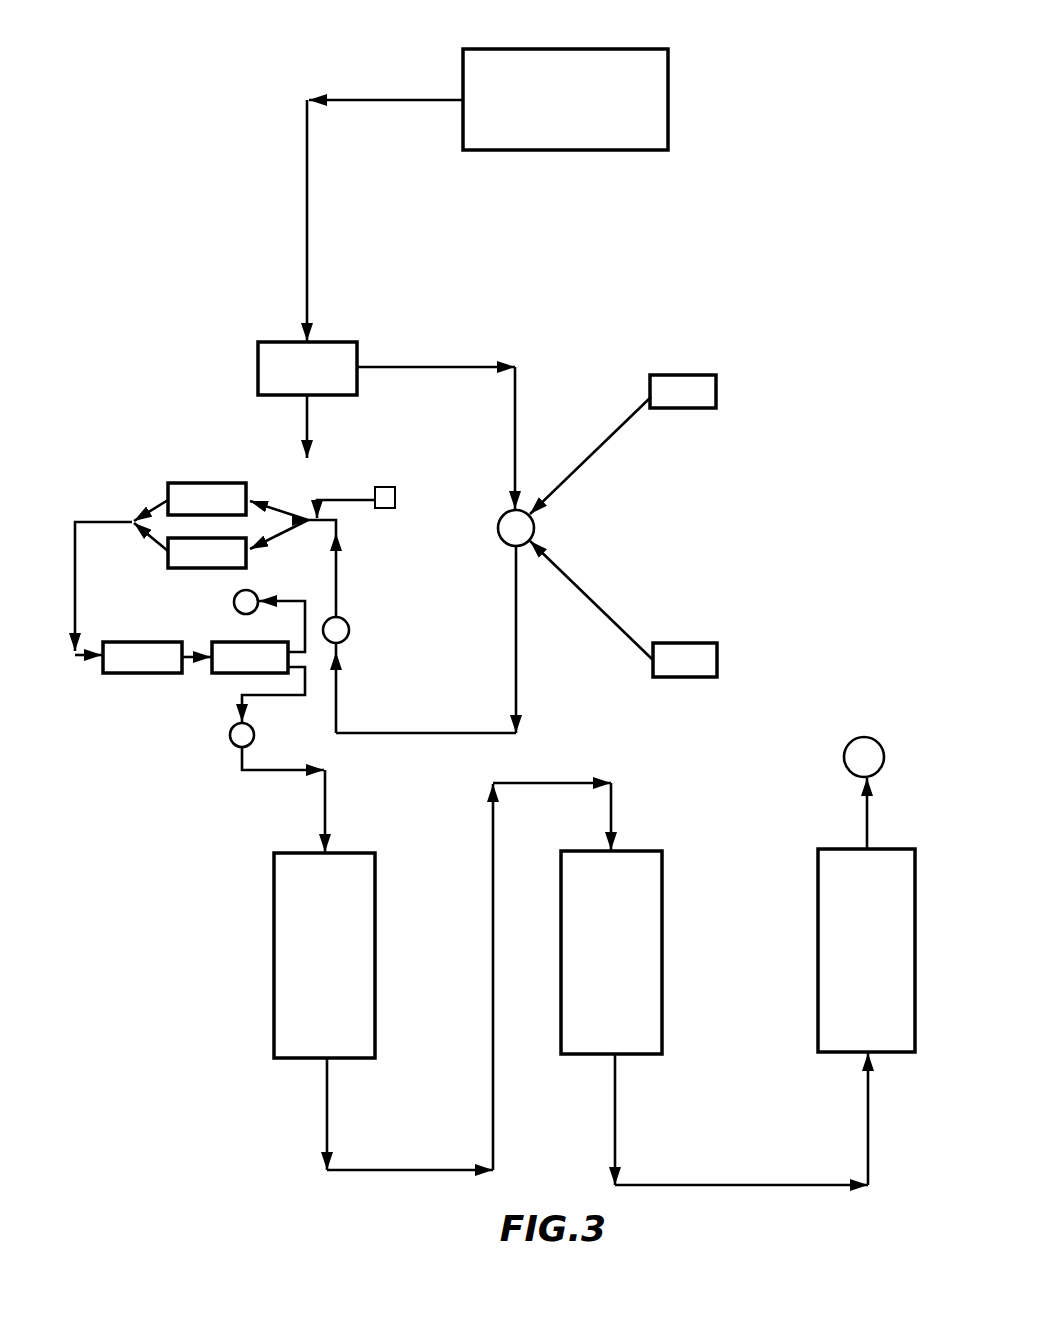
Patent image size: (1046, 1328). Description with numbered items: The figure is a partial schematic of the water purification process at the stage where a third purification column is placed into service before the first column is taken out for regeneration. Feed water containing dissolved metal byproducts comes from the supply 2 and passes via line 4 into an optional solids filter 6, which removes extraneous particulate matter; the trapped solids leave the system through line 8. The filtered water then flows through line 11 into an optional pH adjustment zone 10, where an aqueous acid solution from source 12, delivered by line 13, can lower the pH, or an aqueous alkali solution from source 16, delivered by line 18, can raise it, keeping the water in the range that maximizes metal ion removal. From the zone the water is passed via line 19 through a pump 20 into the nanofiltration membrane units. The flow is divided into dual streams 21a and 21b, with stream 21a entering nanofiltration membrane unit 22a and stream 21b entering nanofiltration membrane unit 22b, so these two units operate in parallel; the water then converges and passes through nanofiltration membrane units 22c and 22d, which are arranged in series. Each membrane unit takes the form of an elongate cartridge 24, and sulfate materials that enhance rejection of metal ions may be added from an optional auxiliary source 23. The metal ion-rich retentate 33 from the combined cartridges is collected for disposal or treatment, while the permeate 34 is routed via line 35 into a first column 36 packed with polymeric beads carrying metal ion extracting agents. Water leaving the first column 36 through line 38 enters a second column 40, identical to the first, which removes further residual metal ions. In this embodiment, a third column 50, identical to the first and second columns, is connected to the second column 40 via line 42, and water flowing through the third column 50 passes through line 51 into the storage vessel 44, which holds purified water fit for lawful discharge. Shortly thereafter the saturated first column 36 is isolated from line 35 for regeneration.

The supply 2 is at (655, 63).
The line 4 is at (305, 197).
The solids filter 6 is at (340, 353).
The line 8 is at (308, 427).
The pH adjustment zone 10 is at (499, 534).
The line 11 is at (518, 398).
The source 12 is at (712, 375).
The line 13 is at (610, 437).
The source 16 is at (713, 653).
The line 18 is at (602, 607).
The line 19 is at (410, 733).
The pump 20 is at (348, 630).
The stream 21a is at (277, 507).
The stream 21b is at (273, 540).
The nanofiltration membrane unit 22a is at (197, 487).
The nanofiltration membrane unit 22b is at (197, 563).
The nanofiltration membrane unit 22c is at (130, 670).
The nanofiltration membrane unit 22d is at (227, 670).
The auxiliary source 23 is at (388, 497).
The cartridge 24 is at (177, 482).
The retentate 33 is at (235, 605).
The permeate 34 is at (254, 727).
The line 35 is at (325, 803).
The first column 36 is at (274, 922).
The line 38 is at (493, 1093).
The second column 40 is at (662, 922).
The line 42 is at (713, 1185).
The storage vessel 44 is at (875, 743).
The third column 50 is at (818, 915).
The line 51 is at (868, 815).